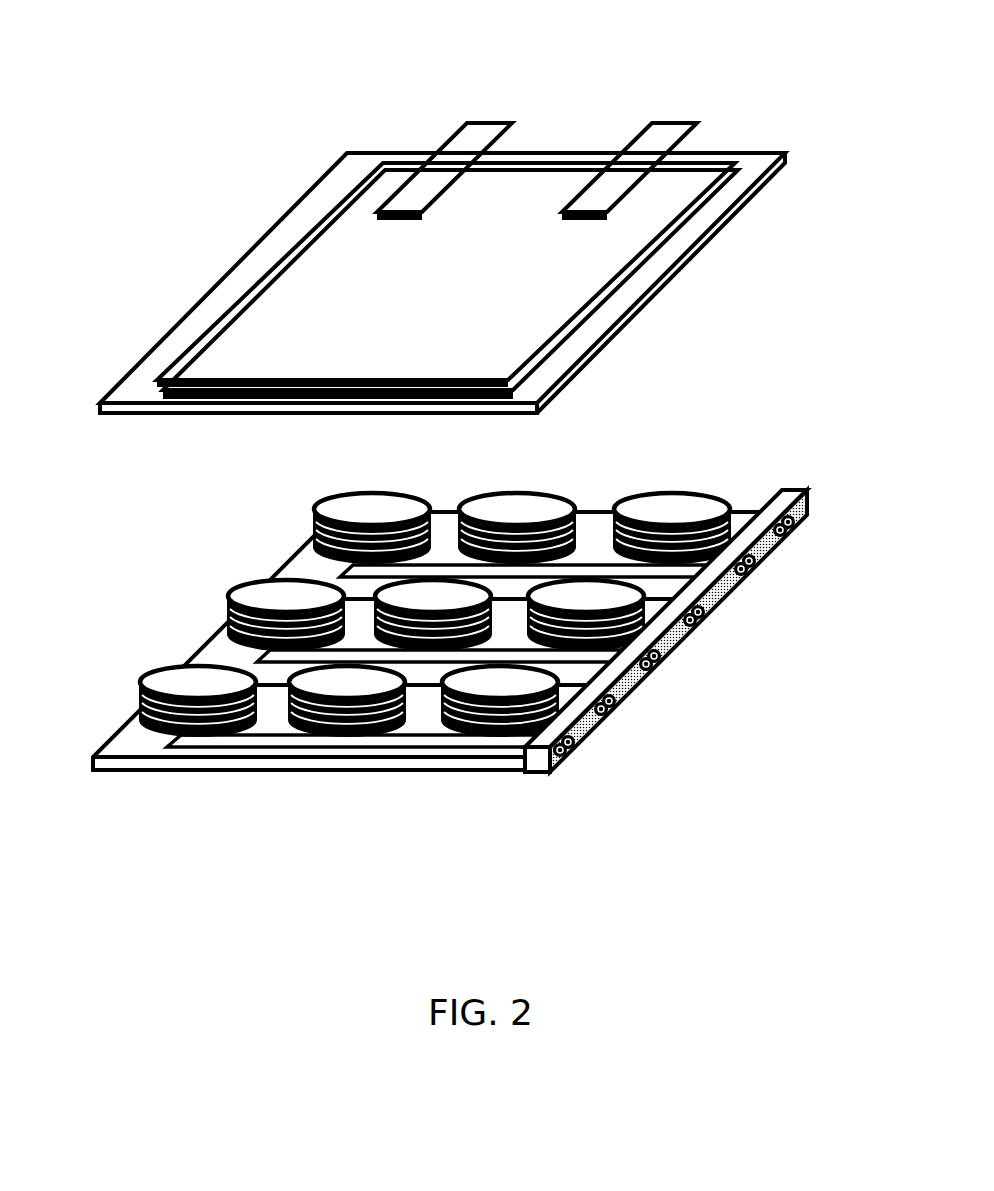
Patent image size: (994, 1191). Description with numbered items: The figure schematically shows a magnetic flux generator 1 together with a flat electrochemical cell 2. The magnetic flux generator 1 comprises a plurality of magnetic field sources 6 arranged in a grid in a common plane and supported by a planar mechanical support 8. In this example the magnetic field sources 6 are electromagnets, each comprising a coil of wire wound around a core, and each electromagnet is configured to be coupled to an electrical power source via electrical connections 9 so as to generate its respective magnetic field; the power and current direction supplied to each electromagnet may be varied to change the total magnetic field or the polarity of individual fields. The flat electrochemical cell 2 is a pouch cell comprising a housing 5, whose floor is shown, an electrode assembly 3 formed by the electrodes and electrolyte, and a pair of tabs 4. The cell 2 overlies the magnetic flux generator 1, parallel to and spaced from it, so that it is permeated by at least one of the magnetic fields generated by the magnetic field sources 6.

The magnetic flux generator 1 is at (472, 574).
The flat electrochemical cell 2 is at (452, 295).
The electrode assembly 3 is at (282, 267).
The tabs 4 is at (476, 133).
The housing 5 is at (337, 182).
The magnetic field sources 6 is at (675, 502).
The mechanical support 8 is at (783, 498).
The electrical connections 9 is at (350, 573).